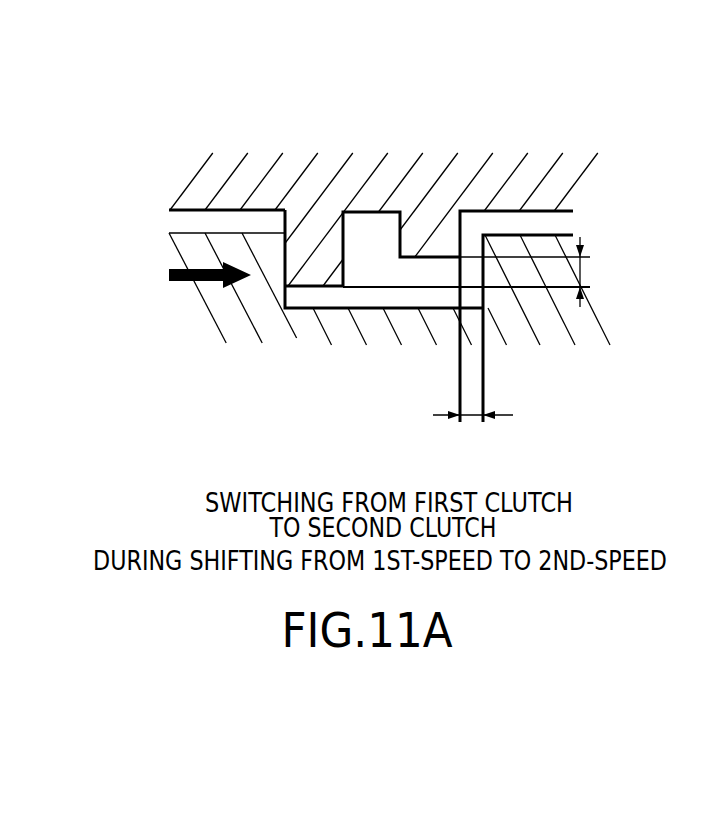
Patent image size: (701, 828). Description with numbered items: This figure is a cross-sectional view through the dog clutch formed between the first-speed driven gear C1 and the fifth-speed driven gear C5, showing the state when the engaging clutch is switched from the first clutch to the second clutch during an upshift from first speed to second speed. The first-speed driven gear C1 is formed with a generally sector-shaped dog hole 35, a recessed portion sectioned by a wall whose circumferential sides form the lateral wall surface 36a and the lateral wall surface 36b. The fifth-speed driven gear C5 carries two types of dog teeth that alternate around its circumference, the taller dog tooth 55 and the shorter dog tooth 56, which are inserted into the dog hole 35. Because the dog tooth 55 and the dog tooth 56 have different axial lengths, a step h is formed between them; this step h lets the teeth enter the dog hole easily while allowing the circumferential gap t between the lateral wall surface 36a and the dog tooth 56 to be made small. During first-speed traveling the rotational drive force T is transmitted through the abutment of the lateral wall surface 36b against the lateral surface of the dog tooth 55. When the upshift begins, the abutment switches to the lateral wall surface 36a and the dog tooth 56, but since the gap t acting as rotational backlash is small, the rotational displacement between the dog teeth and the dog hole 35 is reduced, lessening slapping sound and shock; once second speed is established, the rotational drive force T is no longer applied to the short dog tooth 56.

The dog hole 35 is at (377, 234).
The lateral wall surface 36a is at (483, 272).
The lateral wall surface 36b is at (287, 291).
The dog tooth 55 is at (322, 268).
The dog tooth 56 is at (422, 238).
The first-speed driven gear C1 is at (278, 391).
The fifth-speed driven gear C5 is at (282, 120).
The rotational drive force T is at (200, 283).
The step h is at (589, 272).
The circumferential gap t is at (473, 438).